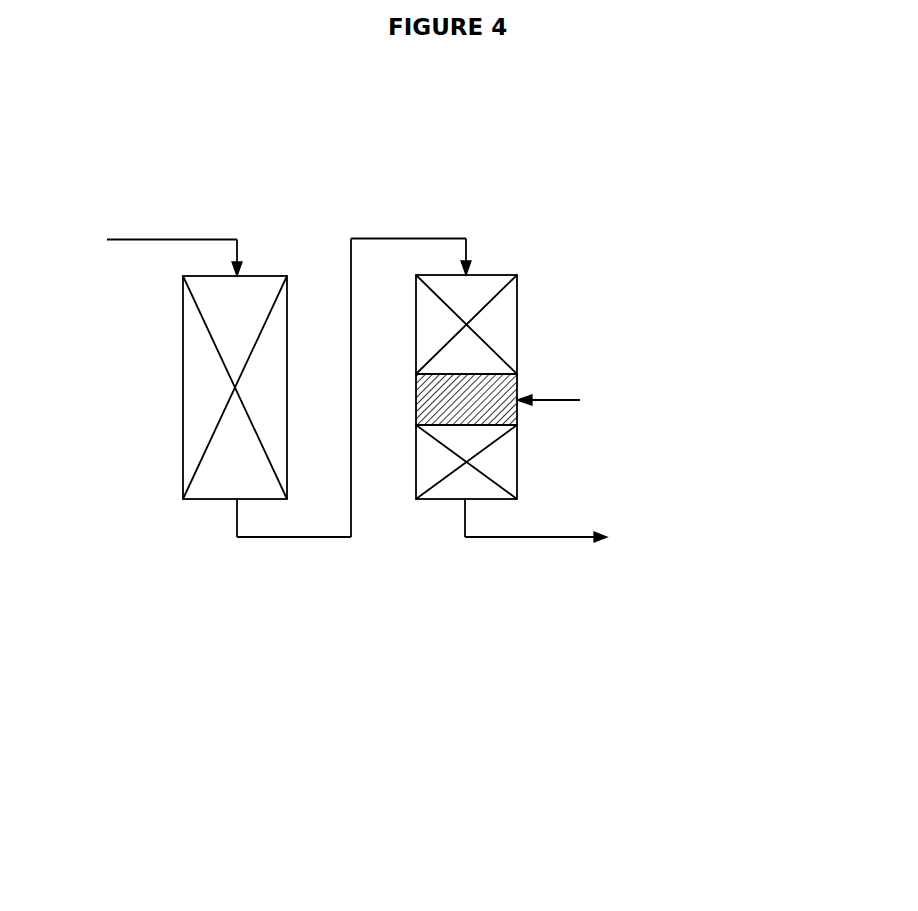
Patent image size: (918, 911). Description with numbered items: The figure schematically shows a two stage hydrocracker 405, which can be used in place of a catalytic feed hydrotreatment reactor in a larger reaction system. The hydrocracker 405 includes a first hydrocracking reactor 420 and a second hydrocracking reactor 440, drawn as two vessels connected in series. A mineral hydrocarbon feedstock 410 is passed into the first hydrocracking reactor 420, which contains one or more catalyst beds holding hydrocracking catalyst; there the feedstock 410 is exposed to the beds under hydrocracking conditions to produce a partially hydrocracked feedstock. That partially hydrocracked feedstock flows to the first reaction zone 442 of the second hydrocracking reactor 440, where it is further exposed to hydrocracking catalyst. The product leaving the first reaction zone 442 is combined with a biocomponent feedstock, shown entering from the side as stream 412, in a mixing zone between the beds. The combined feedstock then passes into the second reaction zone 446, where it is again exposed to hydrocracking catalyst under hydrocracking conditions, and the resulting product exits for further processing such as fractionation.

The two stage hydrocracker 405 is at (203, 700).
The mineral hydrocarbon feedstock 410 is at (157, 247).
The first hydrocracking reactor 420 is at (176, 395).
The first reaction zone 442 is at (533, 295).
The second hydrocracking reactor 440 is at (533, 387).
The side inlet stream 412 is at (577, 395).
The second reaction zone 446 is at (517, 481).